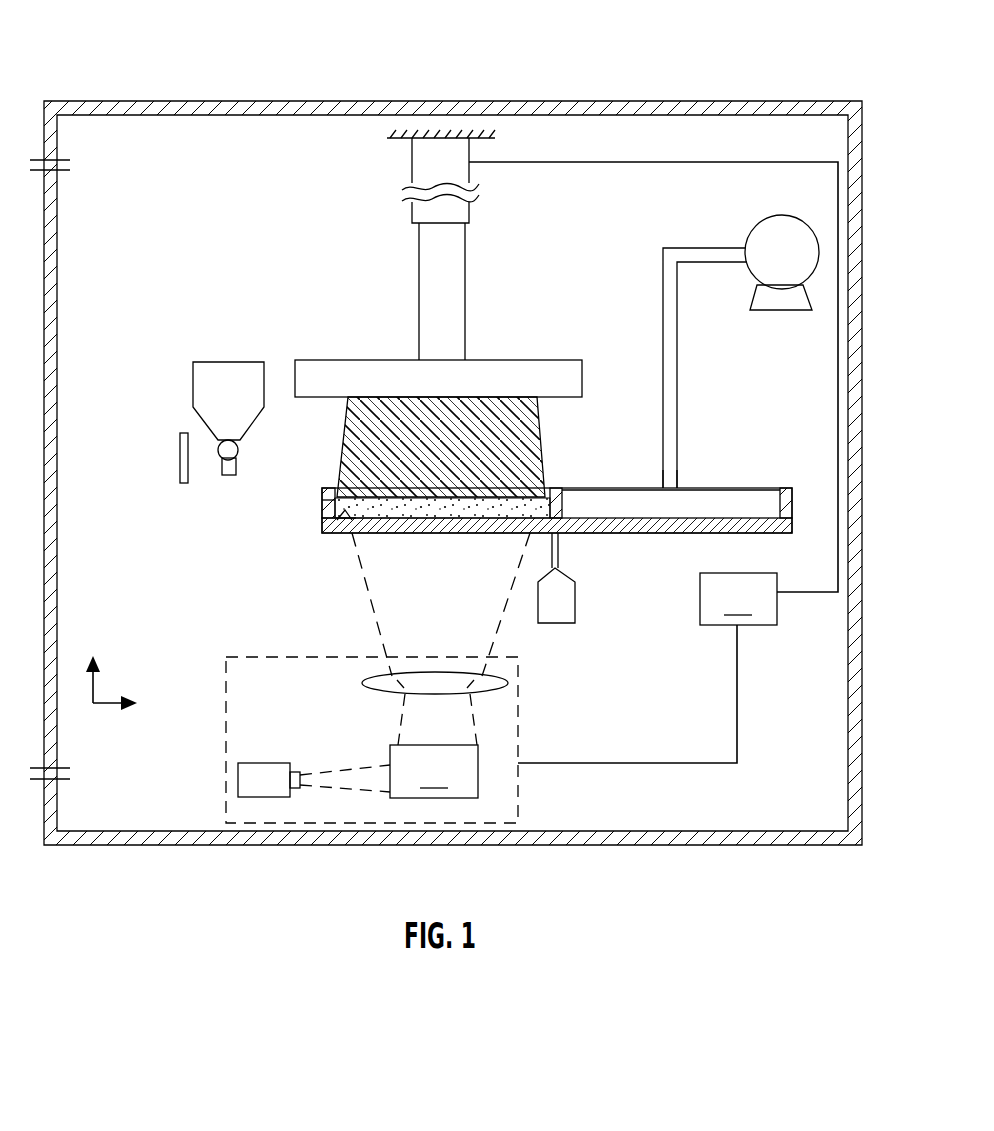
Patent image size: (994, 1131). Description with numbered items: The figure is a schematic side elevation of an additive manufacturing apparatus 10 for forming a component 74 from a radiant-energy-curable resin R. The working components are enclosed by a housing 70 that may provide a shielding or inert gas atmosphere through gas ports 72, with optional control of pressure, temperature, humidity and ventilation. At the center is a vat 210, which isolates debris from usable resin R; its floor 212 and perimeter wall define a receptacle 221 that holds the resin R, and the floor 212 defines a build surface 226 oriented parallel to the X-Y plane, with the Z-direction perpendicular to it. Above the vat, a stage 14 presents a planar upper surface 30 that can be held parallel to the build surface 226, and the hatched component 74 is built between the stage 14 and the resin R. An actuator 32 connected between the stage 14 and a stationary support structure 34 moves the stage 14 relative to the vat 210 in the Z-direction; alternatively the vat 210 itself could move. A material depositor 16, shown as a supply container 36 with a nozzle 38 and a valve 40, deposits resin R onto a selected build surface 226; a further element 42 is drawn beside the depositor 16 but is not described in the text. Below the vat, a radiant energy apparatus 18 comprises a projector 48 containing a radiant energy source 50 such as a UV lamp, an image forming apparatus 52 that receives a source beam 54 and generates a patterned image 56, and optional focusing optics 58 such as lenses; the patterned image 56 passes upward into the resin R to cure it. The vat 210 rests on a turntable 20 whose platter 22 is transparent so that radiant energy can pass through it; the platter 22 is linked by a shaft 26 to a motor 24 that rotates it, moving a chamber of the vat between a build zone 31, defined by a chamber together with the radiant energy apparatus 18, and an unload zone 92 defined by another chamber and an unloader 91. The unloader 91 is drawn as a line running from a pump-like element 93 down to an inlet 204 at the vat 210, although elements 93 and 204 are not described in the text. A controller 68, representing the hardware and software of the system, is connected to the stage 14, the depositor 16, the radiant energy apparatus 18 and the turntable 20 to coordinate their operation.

The apparatus 10 is at (470, 72).
The stage 14 is at (556, 370).
The material depositor 16 is at (189, 326).
The radiant energy apparatus 18 is at (213, 737).
The turntable 20 is at (600, 555).
The platter 22 is at (523, 501).
The motor 24 is at (568, 605).
The shaft 26 is at (552, 545).
The planar upper surface 30 is at (463, 442).
The build zone 31 is at (568, 450).
The actuator 32 is at (455, 250).
The stationary support structure 34 is at (478, 140).
The supply container 36 is at (216, 370).
The nozzle 38 is at (236, 466).
The valve 40 is at (239, 445).
The wiper blade 42 is at (178, 456).
The projector 48 is at (518, 722).
The radiant energy source 50 is at (258, 763).
The image forming apparatus 52 is at (434, 771).
The source beam 54 is at (330, 768).
The patterned image 56 is at (378, 625).
The focusing optics 58 is at (500, 683).
The controller 68 is at (653, 462).
The housing 70 is at (300, 108).
The gas ports 72 is at (64, 162).
The component 74 is at (358, 430).
The unloader 91 is at (702, 247).
The unload zone 92 is at (745, 455).
The pump 93 is at (800, 219).
The resin inlet 204 is at (700, 488).
The vat 210 is at (800, 505).
The floor 212 is at (331, 526).
The receptacle 221 is at (320, 508).
The build surface 226 is at (343, 526).
The resin R is at (327, 504).